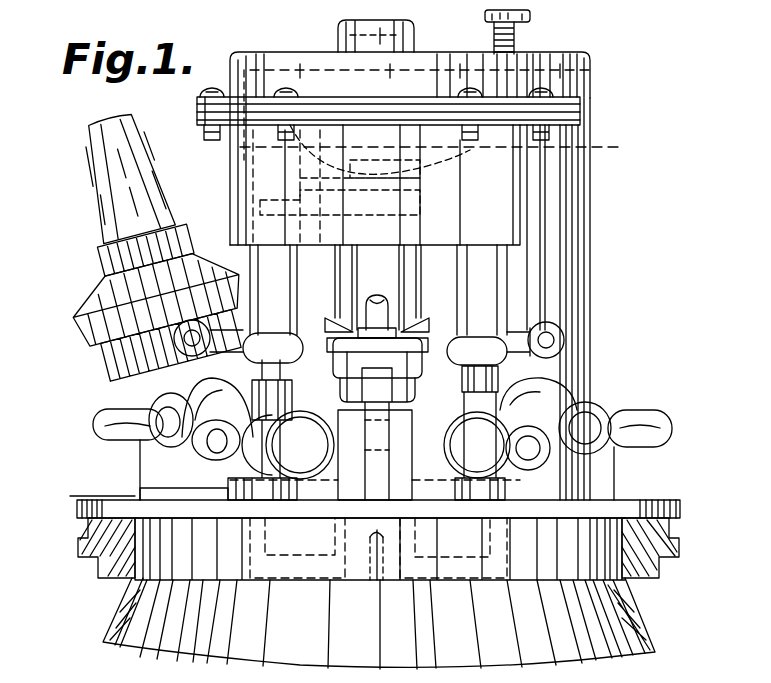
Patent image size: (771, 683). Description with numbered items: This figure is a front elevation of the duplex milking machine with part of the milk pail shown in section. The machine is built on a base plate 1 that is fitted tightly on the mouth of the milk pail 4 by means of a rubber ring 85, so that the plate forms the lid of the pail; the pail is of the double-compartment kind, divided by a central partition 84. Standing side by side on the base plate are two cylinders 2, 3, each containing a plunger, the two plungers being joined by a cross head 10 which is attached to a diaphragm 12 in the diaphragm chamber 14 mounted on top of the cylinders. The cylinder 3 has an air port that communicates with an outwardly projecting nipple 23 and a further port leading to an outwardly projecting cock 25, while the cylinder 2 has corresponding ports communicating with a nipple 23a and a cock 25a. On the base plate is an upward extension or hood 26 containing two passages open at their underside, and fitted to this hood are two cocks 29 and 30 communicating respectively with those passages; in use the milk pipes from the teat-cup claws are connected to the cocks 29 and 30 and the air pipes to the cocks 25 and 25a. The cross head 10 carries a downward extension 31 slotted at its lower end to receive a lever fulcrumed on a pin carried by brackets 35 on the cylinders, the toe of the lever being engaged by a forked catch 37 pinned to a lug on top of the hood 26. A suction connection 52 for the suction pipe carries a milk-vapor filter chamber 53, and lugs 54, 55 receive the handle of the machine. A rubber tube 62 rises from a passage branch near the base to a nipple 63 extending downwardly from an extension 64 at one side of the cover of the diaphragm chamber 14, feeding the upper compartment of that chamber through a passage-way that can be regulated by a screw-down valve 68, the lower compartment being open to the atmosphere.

The base plate 1 is at (612, 500).
The cylinder 2 is at (252, 257).
The cylinder 3 is at (386, 302).
The milk pail 4 is at (379, 623).
The cross head 10 is at (312, 204).
The diaphragm 12 is at (447, 149).
The diaphragm chamber 14 is at (245, 150).
The nipple 23 is at (565, 335).
The nipple 23a is at (160, 380).
The cock 25 is at (560, 386).
The cock 25a is at (212, 415).
The upward extension or hood 26 is at (375, 455).
The cock 29 is at (68, 495).
The cock 30 is at (610, 412).
The downward extension 31 is at (378, 287).
The brackets 35 is at (430, 352).
The forked catch 37 is at (432, 322).
The suction connection 52 is at (115, 134).
The milk-vapor filter chamber 53 is at (100, 322).
The lug 54 is at (160, 488).
The lug 55 is at (640, 458).
The rubber tube 62 is at (580, 186).
The nipple 63 is at (585, 110).
The extension 64 is at (585, 72).
The screw-down valve 68 is at (531, 14).
The central partition 84 is at (380, 607).
The rubber ring 85 is at (668, 536).